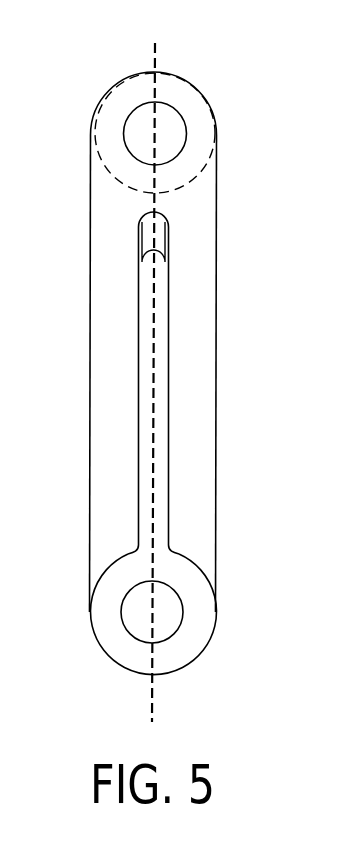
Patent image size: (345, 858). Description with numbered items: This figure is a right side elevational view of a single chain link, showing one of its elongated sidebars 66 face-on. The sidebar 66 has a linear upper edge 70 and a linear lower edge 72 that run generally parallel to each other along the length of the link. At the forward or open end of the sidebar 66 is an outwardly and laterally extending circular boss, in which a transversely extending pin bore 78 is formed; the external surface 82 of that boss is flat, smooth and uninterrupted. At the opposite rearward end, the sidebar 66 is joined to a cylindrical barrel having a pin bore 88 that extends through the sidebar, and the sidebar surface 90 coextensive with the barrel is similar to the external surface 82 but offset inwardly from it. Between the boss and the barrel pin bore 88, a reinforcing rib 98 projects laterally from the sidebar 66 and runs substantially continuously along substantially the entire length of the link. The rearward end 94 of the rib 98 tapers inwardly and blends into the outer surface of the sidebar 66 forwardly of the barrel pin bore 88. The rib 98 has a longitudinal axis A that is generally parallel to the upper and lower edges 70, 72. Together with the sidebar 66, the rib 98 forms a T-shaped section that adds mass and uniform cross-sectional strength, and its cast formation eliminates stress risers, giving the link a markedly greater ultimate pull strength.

The left sidebar 66 is at (195, 253).
The upper edge 70 is at (90, 443).
The lower edge 72 is at (217, 478).
The pin bore 78 is at (183, 598).
The external surface 82 is at (188, 637).
The barrel pin bore 88 is at (181, 113).
The sidebar surface 90 is at (187, 105).
The rearward end of rib 94 is at (158, 224).
The reinforcing rib 98 is at (158, 362).
The longitudinal axis A is at (153, 383).